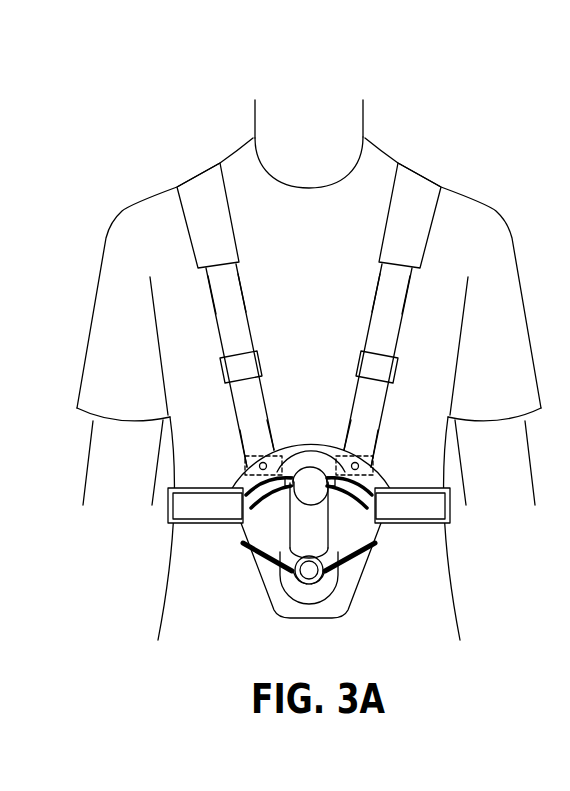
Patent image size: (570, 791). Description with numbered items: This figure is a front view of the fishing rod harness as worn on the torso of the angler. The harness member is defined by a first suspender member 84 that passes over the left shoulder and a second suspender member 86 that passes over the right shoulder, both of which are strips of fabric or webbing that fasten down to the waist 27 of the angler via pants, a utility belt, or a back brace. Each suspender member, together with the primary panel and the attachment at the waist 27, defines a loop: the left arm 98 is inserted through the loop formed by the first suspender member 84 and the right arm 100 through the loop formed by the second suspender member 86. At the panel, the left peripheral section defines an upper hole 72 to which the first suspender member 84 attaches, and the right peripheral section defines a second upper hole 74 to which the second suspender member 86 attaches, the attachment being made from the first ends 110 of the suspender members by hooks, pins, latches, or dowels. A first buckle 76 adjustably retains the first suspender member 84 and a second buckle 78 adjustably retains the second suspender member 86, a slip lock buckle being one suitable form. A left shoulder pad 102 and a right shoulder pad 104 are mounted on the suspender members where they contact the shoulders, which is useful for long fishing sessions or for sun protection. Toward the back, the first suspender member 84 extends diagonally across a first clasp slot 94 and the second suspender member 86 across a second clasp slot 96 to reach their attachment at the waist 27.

The waist 27 is at (448, 557).
The upper hole 72 is at (287, 442).
The second upper hole 74 is at (332, 445).
The first buckle 76 is at (223, 368).
The second buckle 78 is at (392, 368).
The first suspender member 84 is at (243, 318).
The second suspender member 86 is at (393, 298).
The first clasp slot 94 is at (212, 292).
The second clasp slot 96 is at (402, 322).
The left arm 98 is at (110, 262).
The right arm 100 is at (498, 237).
The left shoulder pad 102 is at (205, 175).
The right shoulder pad 104 is at (423, 173).
The first ends 110 is at (297, 464).